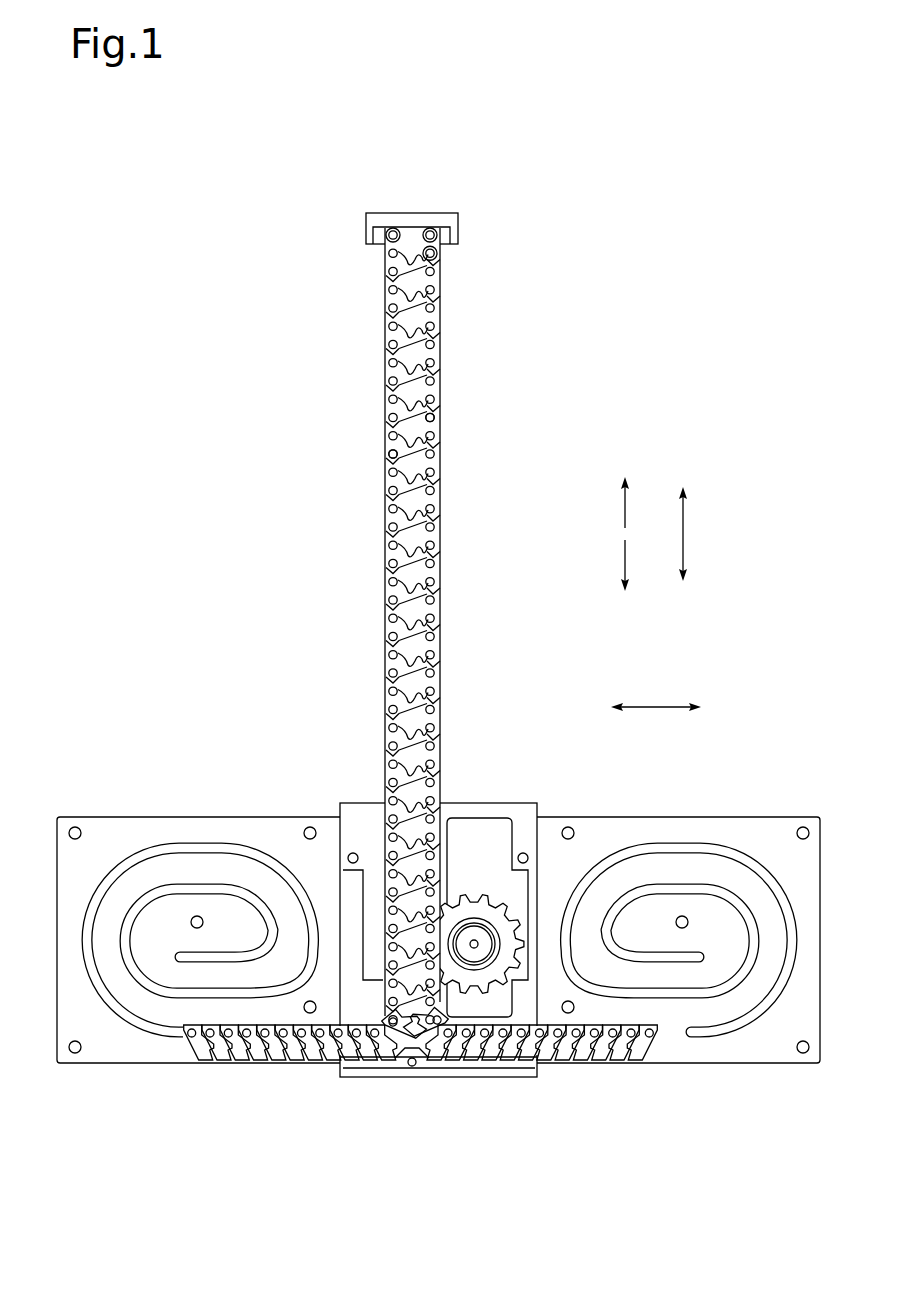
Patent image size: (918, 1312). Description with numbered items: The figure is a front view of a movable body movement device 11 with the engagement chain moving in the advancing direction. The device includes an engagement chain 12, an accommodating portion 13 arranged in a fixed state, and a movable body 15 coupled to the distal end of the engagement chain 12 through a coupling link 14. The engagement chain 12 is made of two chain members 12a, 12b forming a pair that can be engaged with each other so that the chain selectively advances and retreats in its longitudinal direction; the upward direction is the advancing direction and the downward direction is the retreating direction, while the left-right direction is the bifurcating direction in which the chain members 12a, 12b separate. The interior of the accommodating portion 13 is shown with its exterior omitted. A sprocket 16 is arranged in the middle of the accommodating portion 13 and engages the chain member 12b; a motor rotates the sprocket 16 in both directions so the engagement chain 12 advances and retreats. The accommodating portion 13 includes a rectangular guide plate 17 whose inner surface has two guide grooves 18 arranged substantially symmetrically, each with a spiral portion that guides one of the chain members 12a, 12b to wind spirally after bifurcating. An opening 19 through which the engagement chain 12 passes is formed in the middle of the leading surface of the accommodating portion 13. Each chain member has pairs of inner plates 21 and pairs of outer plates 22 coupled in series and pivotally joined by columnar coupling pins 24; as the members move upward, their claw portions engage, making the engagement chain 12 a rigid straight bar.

The movable body movement device 11 is at (622, 334).
The engagement chain 12 is at (421, 1084).
The chain member 12a is at (350, 1057).
The chain member 12b is at (460, 1057).
The accommodating portion 13 is at (704, 817).
The coupling link 14 is at (417, 626).
The movable body 15 is at (420, 212).
The sprocket 16 is at (473, 907).
The guide plate 17 is at (640, 817).
The guide groove 18 is at (145, 1029).
The opening 19 is at (451, 793).
The inner plate 21 is at (437, 447).
The outer plate 22 is at (434, 428).
The coupling pin 24 is at (434, 417).